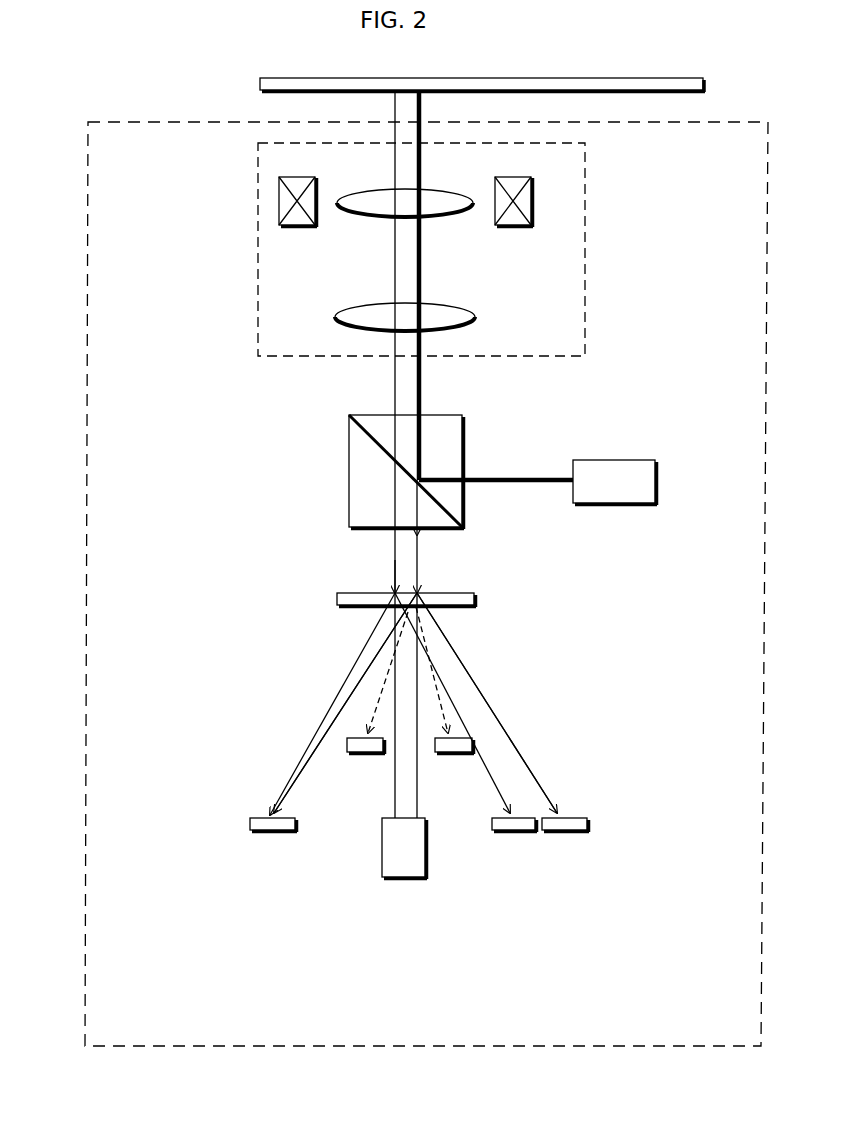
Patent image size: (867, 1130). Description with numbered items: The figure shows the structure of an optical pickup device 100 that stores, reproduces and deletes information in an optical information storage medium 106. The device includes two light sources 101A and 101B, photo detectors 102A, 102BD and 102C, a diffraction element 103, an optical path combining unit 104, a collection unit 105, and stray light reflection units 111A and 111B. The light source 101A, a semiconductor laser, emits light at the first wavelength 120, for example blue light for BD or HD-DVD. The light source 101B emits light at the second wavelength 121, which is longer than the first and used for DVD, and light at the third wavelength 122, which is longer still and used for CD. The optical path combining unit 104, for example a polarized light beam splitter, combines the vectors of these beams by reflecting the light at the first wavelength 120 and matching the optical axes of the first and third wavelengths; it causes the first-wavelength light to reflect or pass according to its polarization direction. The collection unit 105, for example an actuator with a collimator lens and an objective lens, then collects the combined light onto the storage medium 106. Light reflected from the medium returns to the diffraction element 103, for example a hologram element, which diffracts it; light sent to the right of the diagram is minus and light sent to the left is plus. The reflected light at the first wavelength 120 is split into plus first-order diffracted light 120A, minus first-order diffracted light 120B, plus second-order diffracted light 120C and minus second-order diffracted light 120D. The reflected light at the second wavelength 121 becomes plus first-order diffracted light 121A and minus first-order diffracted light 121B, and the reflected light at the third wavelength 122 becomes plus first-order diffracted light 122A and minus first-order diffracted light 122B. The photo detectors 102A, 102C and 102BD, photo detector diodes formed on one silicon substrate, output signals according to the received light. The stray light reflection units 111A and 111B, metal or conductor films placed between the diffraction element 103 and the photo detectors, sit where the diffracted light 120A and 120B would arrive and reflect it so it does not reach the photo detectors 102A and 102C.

The optical pickup device 100 is at (88, 424).
The light source 101A is at (610, 470).
The light source 101B is at (405, 880).
The photo detector 102A is at (272, 833).
The photo detector 102BD is at (562, 835).
The photo detector 102C is at (512, 835).
The diffraction element 103 is at (337, 597).
The optical path combining unit 104 is at (349, 468).
The collection unit 105 is at (275, 289).
The optical information storage medium 106 is at (262, 86).
The stray light reflection unit 111A is at (360, 755).
The stray light reflection unit 111B is at (450, 755).
The light at the first wavelength 120 is at (497, 478).
The plus first-order diffracted light 120A is at (383, 698).
The minus first-order diffracted light 120B is at (442, 707).
The plus second-order diffracted light 120C is at (370, 662).
The minus second-order diffracted light 120D is at (480, 693).
The light at the second wavelength 121 is at (395, 560).
The plus first-order diffracted light 121A is at (370, 628).
The minus first-order diffracted light 121B is at (443, 680).
The light at the third wavelength 122 is at (412, 562).
The plus first-order diffracted light 122A is at (287, 703).
The minus first-order diffracted light 122B is at (515, 703).